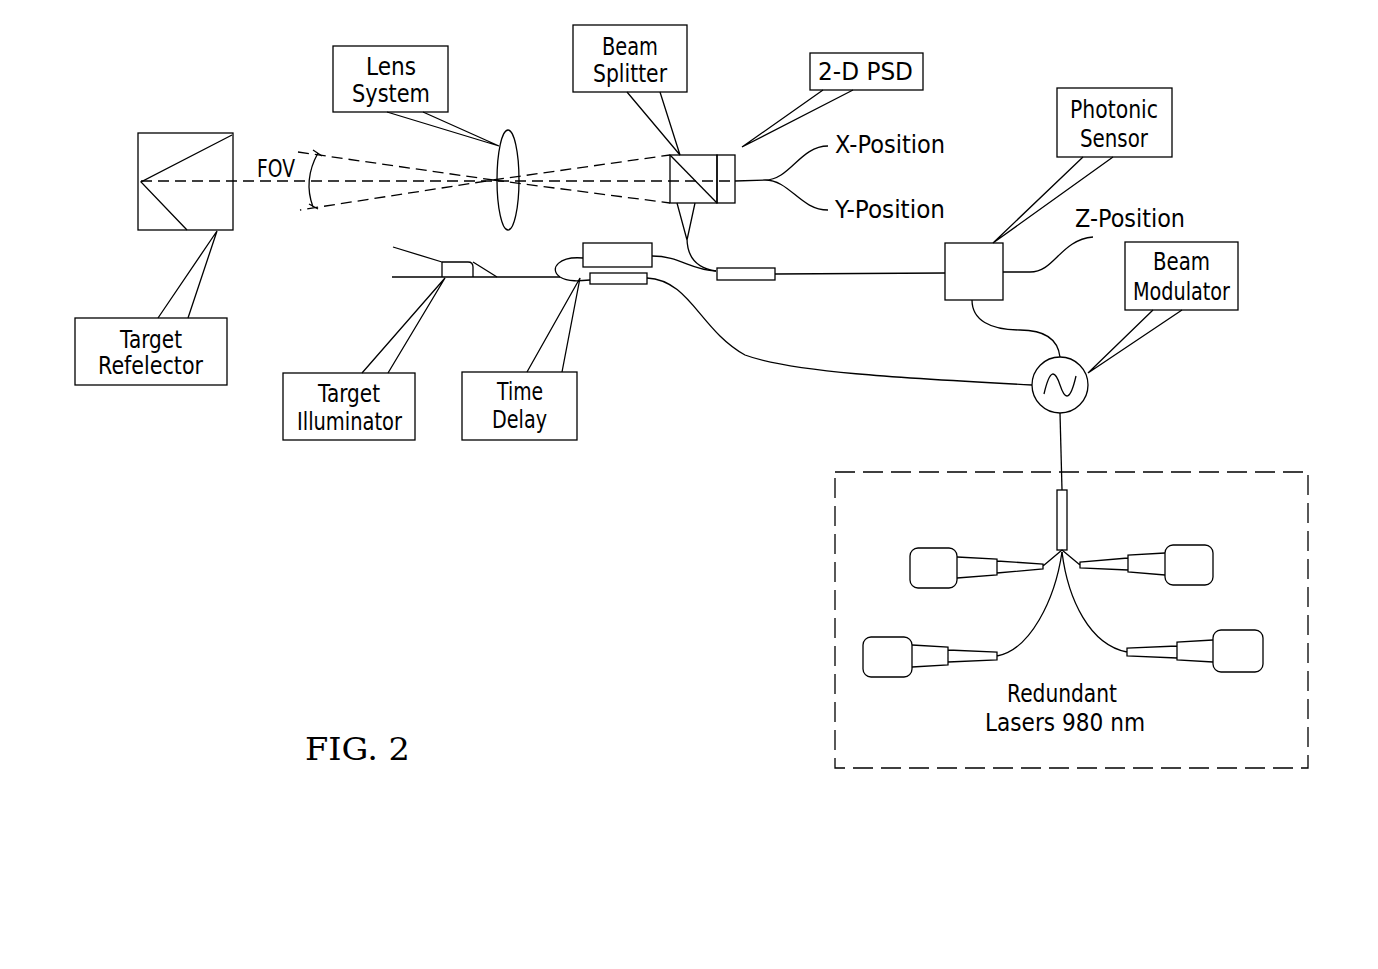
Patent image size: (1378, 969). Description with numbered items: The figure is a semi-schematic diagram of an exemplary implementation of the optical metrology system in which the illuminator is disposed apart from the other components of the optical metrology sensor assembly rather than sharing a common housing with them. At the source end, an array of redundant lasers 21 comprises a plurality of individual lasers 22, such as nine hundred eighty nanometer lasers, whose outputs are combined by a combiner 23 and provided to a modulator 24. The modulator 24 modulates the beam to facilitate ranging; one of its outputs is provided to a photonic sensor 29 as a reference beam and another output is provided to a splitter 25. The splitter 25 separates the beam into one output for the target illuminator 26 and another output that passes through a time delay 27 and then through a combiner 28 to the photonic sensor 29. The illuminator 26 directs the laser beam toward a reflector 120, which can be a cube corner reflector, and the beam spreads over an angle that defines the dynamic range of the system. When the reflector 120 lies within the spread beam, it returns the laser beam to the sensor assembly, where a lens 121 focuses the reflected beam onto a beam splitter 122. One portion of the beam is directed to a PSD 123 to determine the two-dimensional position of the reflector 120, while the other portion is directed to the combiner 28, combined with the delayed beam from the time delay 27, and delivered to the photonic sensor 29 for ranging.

The reflector 120 is at (228, 230).
The lens 121 is at (508, 130).
The beam splitter 122 is at (705, 155).
The PSD 123 is at (728, 203).
The time delay 27 is at (595, 243).
The illuminator 26 is at (468, 280).
The splitter 25 is at (603, 274).
The combiner 28 is at (768, 281).
The photonic sensor 29 is at (945, 289).
The modulator 24 is at (1088, 398).
The combiner 23 is at (1068, 495).
The lasers 22 is at (930, 548).
The array of redundant lasers 21 is at (1308, 500).